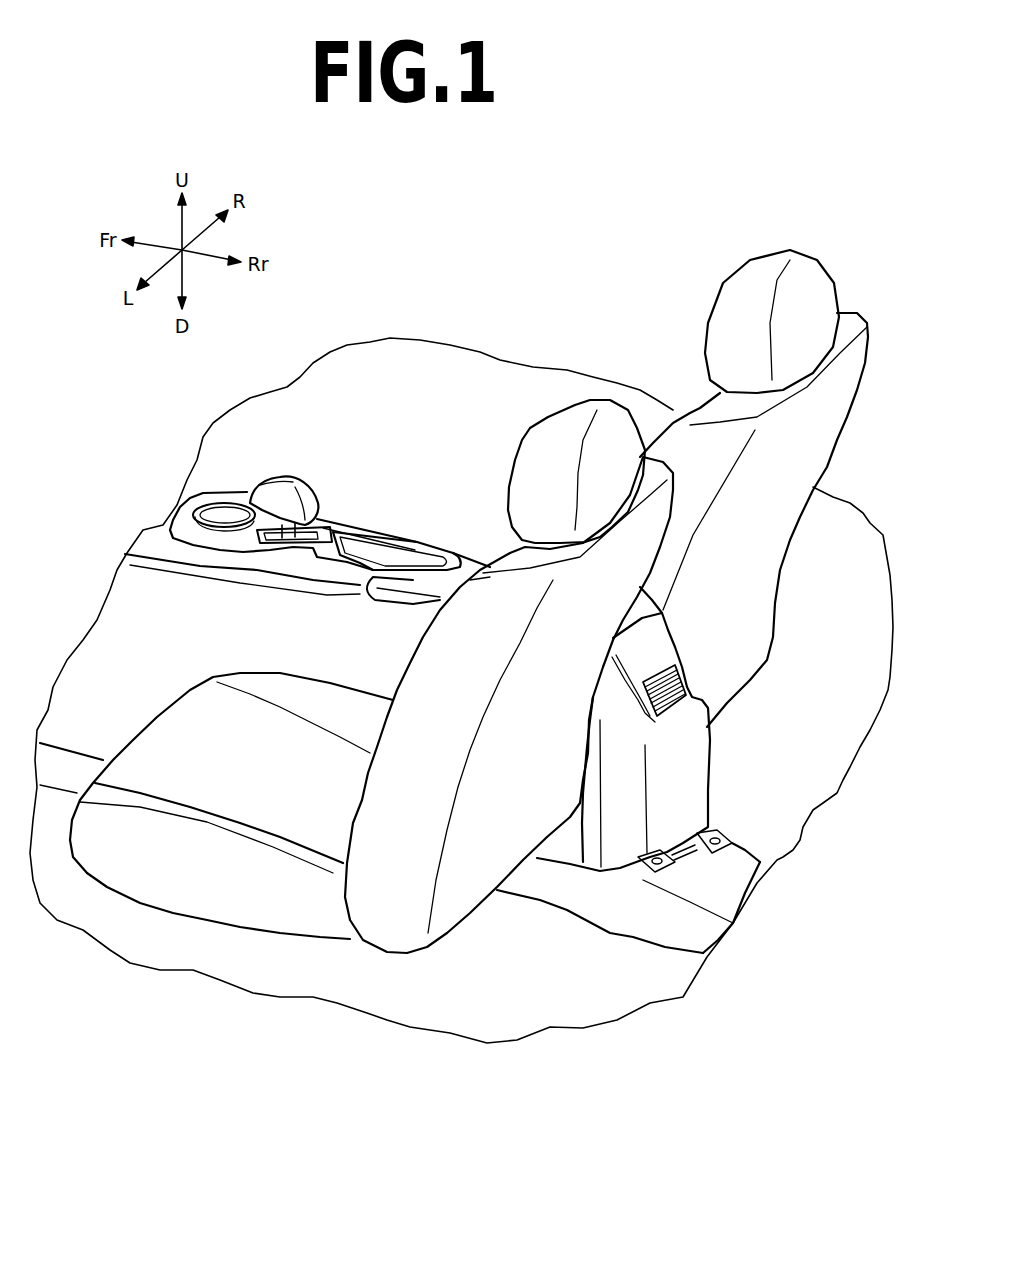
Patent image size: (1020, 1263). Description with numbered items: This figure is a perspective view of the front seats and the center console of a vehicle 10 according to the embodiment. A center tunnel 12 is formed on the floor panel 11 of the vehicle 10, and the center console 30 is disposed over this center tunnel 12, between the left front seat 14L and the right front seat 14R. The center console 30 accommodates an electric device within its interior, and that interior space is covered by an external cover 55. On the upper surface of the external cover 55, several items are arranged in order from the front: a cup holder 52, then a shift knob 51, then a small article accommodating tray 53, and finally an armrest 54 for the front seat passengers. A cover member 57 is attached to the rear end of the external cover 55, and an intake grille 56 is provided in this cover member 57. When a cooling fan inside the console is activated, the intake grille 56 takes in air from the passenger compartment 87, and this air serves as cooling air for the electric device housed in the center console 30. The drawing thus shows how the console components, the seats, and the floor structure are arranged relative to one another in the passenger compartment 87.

The vehicle 10 is at (648, 200).
The floor panel 11 is at (823, 763).
The center tunnel 12 is at (737, 882).
The left front seat 14L is at (557, 440).
The right front seat 14R is at (818, 297).
The center console 30 is at (382, 524).
The shift knob 51 is at (302, 482).
The cup holder 52 is at (230, 518).
The small article accommodating tray 53 is at (390, 563).
The armrest 54 is at (473, 553).
The external cover 55 is at (150, 633).
The intake grille 56 is at (700, 697).
The cover member 57 is at (697, 775).
The passenger compartment 87 is at (737, 552).